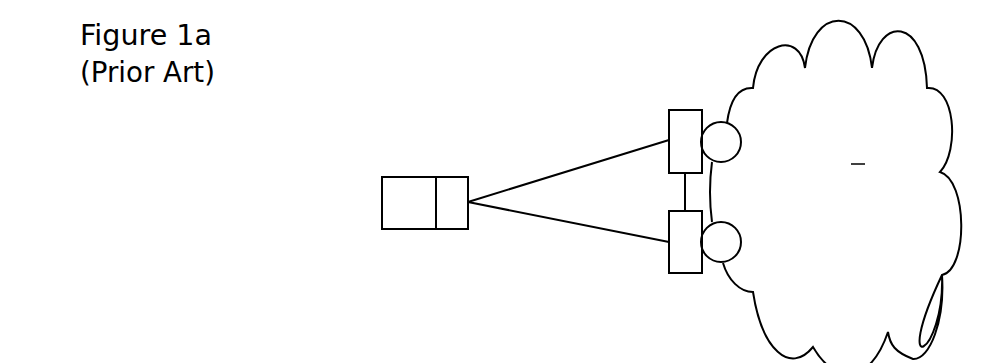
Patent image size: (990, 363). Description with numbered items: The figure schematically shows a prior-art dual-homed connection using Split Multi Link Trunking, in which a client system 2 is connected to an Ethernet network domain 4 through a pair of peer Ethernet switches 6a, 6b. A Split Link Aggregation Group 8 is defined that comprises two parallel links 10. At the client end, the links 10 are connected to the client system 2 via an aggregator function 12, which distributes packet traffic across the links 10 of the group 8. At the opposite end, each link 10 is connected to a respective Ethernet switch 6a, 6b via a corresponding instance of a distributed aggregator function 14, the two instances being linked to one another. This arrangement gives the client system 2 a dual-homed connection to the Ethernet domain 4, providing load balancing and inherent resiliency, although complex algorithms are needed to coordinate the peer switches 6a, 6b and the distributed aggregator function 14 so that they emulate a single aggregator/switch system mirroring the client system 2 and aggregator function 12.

The client system 2 is at (394, 177).
The aggregator function 12 is at (450, 229).
The parallel links 10 is at (543, 178).
The Split Link Aggregation Group 8 is at (532, 126).
The distributed aggregator function 14 is at (680, 98).
The Ethernet switch 6a is at (741, 143).
The Ethernet switch 6b is at (741, 243).
The Ethernet network domain 4 is at (835, 192).